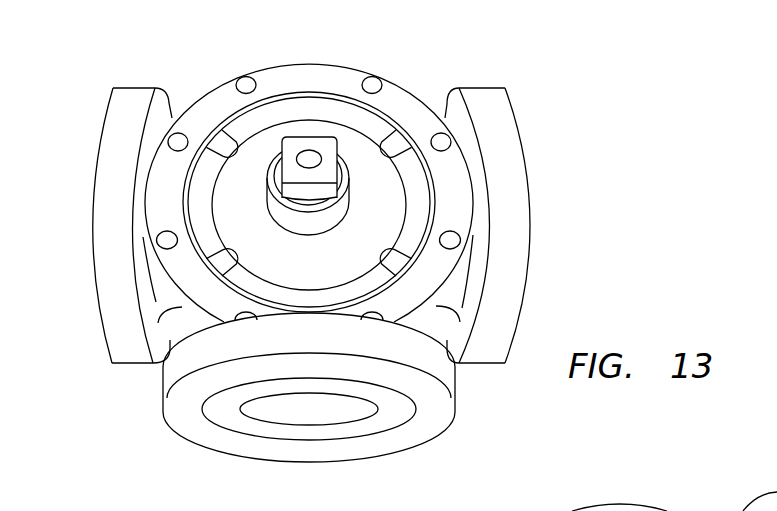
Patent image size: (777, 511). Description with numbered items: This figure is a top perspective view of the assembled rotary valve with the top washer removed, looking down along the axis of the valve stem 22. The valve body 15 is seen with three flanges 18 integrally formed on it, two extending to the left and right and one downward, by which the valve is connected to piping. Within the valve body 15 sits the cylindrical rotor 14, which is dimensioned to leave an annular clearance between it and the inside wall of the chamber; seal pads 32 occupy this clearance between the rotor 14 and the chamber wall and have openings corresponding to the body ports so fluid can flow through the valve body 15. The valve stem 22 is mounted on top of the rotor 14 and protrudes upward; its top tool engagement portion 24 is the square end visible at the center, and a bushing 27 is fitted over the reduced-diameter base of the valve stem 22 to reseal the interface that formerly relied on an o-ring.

The rotor 14 is at (263, 157).
The valve body 15 is at (168, 323).
The flanges 18 is at (106, 113).
The valve stem 22 is at (342, 141).
The top tool engagement portion 24 is at (308, 137).
The bushing 27 is at (352, 180).
The seal pads 32 is at (453, 207).